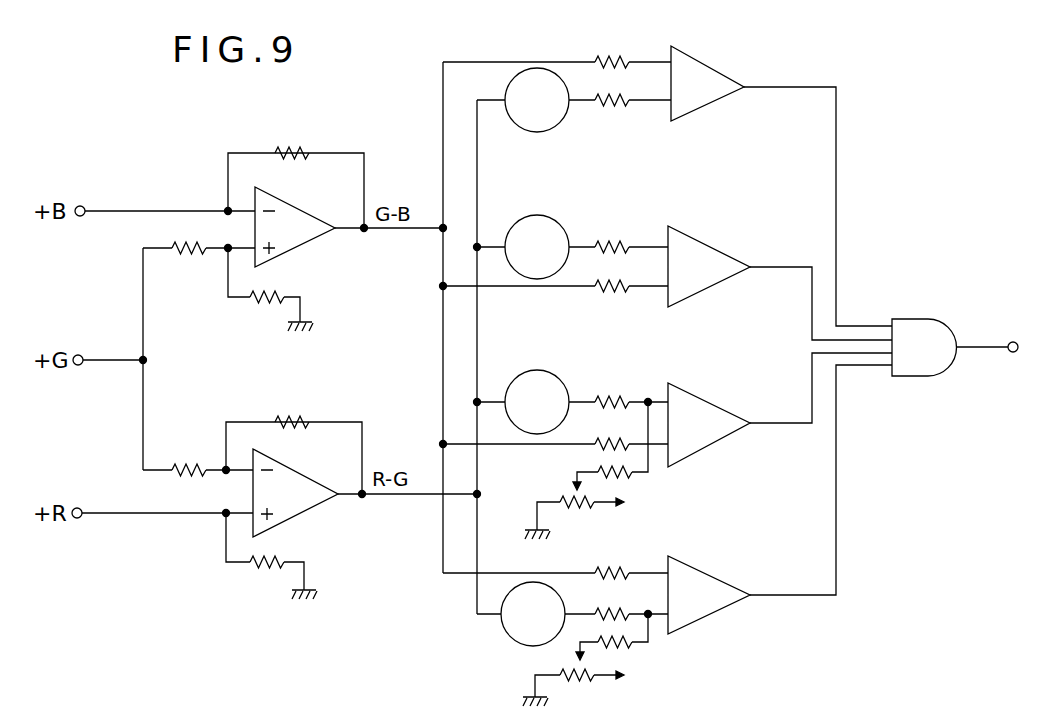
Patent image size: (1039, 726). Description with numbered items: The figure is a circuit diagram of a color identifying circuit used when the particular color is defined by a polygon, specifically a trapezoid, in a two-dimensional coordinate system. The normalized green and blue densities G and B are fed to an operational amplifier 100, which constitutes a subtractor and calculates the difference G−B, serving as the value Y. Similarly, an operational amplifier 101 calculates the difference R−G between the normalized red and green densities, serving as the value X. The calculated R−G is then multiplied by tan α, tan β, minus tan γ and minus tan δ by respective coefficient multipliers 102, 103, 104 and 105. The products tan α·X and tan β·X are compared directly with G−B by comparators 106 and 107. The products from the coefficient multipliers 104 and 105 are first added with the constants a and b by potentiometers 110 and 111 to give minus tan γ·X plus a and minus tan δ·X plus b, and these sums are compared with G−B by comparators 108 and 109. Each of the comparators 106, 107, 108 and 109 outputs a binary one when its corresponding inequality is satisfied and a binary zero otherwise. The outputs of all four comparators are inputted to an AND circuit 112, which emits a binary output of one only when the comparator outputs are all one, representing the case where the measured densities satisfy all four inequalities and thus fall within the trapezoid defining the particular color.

The operational amplifier 100 is at (290, 250).
The operational amplifier 101 is at (293, 516).
The coefficient multiplier 102 is at (545, 131).
The coefficient multiplier 103 is at (545, 215).
The coefficient multiplier 104 is at (545, 370).
The coefficient multiplier 105 is at (503, 634).
The comparator 106 is at (712, 97).
The comparator 107 is at (716, 281).
The comparator 108 is at (722, 437).
The comparator 109 is at (722, 610).
The potentiometer 110 is at (575, 472).
The potentiometer 111 is at (578, 648).
The AND circuit 112 is at (925, 377).